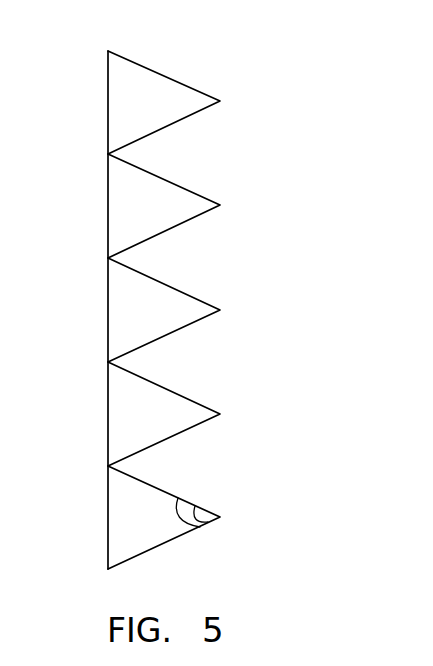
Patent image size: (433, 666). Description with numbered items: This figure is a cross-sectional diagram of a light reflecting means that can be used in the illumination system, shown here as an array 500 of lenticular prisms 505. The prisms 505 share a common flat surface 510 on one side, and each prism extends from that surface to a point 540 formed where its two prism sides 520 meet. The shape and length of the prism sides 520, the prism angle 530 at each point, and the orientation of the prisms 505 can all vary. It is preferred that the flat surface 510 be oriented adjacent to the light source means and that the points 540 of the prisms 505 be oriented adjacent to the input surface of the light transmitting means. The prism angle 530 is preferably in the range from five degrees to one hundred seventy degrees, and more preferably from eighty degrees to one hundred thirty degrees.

The array of lenticular prisms 500 is at (286, 75).
The lenticular prism 505 is at (160, 87).
The flat surface 510 is at (108, 210).
The prism sides 520 is at (165, 232).
The prism angle 530 is at (178, 498).
The points of the prisms 540 is at (221, 308).